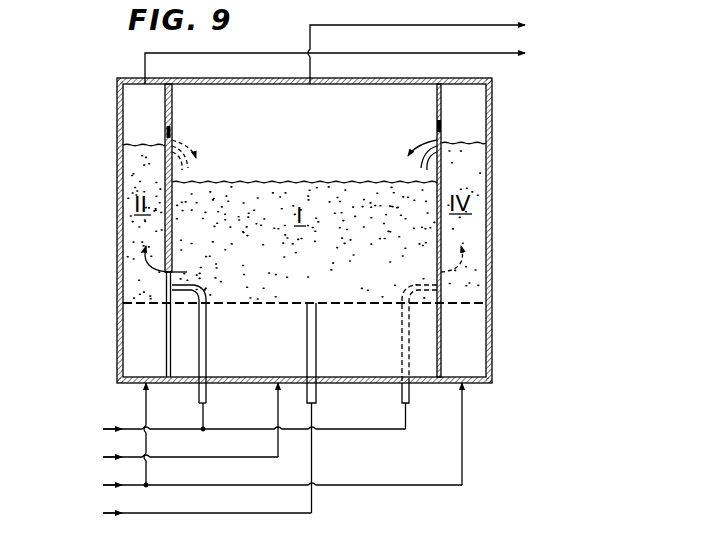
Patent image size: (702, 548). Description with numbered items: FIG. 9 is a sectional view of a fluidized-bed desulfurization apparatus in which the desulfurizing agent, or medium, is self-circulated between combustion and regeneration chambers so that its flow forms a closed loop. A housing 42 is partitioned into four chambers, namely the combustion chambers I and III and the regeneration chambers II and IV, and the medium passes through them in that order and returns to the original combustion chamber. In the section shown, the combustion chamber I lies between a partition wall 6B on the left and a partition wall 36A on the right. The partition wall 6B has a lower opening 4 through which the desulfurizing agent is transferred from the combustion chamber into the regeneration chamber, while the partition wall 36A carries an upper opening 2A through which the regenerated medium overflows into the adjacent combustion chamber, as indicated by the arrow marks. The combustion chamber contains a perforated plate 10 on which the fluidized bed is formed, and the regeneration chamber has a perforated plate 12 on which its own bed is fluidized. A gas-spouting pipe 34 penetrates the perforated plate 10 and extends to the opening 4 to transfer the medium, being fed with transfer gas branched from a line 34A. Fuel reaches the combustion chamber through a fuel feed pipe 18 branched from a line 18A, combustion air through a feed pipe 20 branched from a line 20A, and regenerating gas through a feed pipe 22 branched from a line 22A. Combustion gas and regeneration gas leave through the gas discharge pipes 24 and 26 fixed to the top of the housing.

The housing 42 is at (117, 198).
The partition wall 6B is at (172, 103).
The partition wall 36A is at (437, 103).
The opening 2A is at (172, 135).
The opening 4 is at (176, 274).
The perforated plate 10 is at (240, 305).
The perforated plate 12 is at (165, 305).
The gas-spouting pipe 34 is at (206, 392).
The fuel feed pipe 18 is at (316, 392).
The feed pipe for regeneration gas 22 is at (146, 408).
The feed pipe for combustion air 20 is at (278, 424).
The transfer gas line 34A is at (113, 427).
The combustion air line 20A is at (112, 455).
The regenerating gas line 22A is at (112, 483).
The fuel line 18A is at (113, 511).
The gas discharge pipe 24 is at (465, 25).
The gas discharge pipe 26 is at (465, 53).